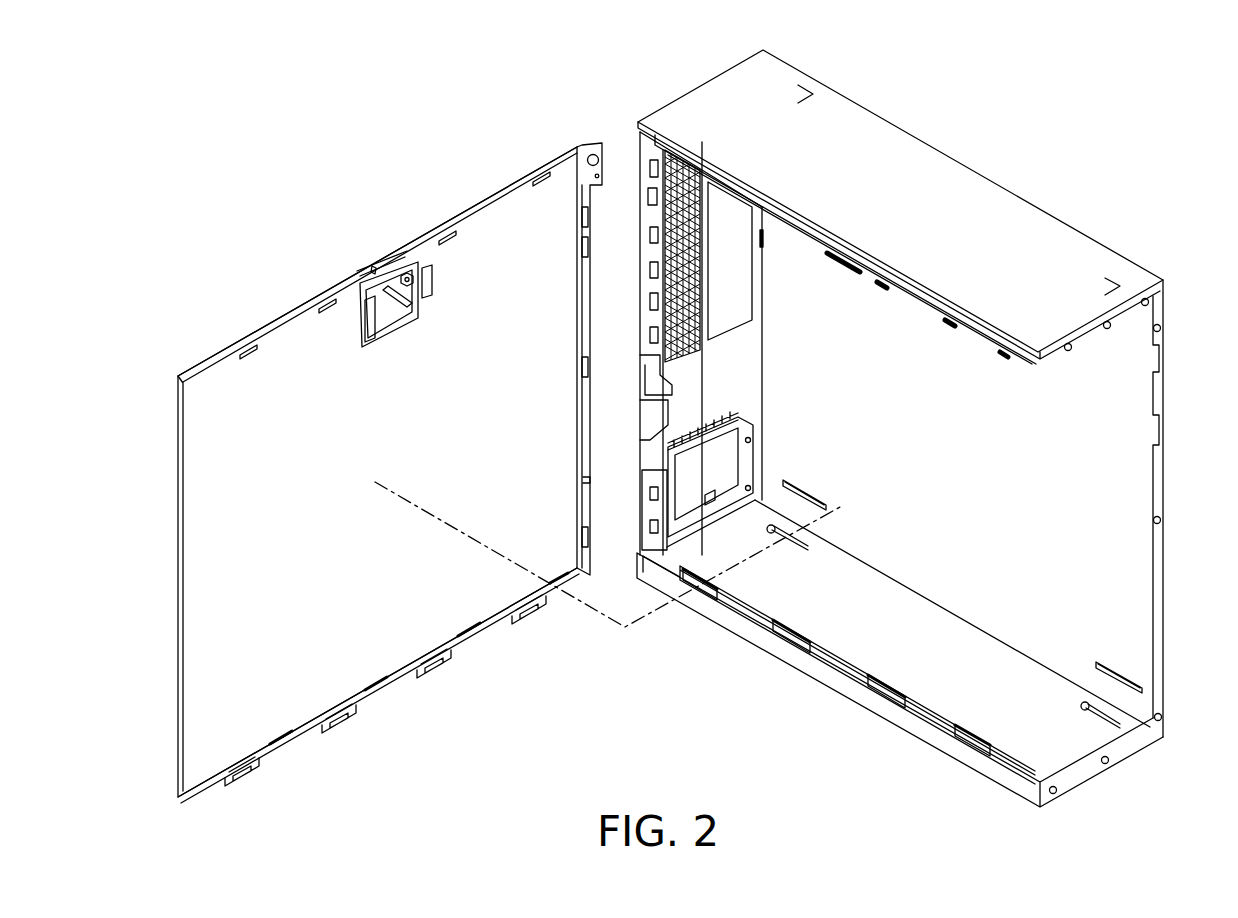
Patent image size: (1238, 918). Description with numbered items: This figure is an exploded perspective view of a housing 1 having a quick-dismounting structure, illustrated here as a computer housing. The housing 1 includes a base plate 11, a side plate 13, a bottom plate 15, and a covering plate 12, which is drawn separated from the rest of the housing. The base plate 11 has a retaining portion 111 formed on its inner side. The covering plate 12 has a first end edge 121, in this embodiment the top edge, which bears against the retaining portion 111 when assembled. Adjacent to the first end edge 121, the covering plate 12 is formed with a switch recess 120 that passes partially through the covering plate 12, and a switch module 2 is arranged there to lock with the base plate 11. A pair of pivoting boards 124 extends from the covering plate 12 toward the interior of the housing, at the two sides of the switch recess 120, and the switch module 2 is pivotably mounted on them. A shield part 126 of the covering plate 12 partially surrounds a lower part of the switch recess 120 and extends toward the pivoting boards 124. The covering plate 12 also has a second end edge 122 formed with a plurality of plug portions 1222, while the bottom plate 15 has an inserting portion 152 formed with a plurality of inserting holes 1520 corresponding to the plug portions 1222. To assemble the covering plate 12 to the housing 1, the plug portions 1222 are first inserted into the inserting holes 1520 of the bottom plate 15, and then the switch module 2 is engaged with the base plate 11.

The housing 1 is at (1094, 76).
The base plate 11 is at (930, 170).
The retaining portion 111 is at (828, 246).
The covering plate 12 is at (497, 228).
The switch recess 120 is at (373, 272).
The first end edge 121 is at (285, 325).
The second end edge 122 is at (295, 735).
The plug portions 1222 is at (358, 714).
The pivoting boards 124 is at (358, 310).
The shield part 126 is at (362, 330).
The side plate 13 is at (1135, 402).
The bottom plate 15 is at (1050, 772).
The inserting portion 152 is at (910, 687).
The inserting holes 1520 is at (870, 692).
The switch module 2 is at (401, 308).